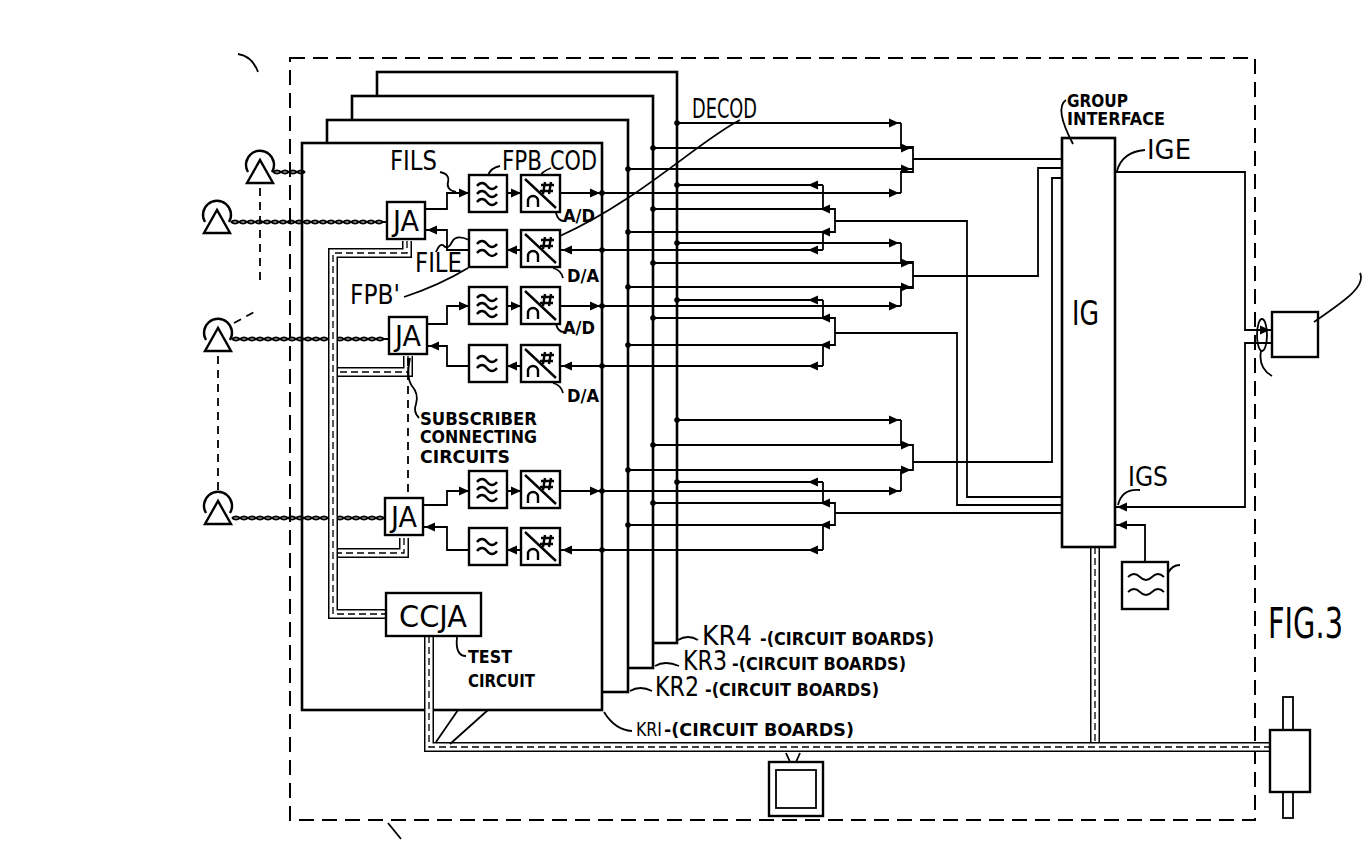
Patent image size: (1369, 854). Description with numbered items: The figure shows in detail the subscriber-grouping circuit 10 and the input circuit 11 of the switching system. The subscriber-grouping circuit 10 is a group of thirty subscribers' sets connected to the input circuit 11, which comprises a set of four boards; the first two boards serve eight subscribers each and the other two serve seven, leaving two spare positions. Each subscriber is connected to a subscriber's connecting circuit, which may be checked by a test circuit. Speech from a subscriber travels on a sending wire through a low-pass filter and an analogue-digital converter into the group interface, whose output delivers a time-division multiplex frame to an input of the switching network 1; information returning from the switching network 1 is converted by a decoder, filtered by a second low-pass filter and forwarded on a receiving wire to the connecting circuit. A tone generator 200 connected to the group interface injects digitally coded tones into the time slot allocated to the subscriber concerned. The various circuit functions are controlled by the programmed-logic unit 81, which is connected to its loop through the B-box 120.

The switching network 1 is at (1311, 313).
The subscriber-grouping circuit 10 is at (228, 170).
The input circuit 11 is at (312, 773).
The programmed-logic unit 81 is at (823, 790).
The B-box 120 is at (1296, 724).
The tone generator 200 is at (1168, 600).